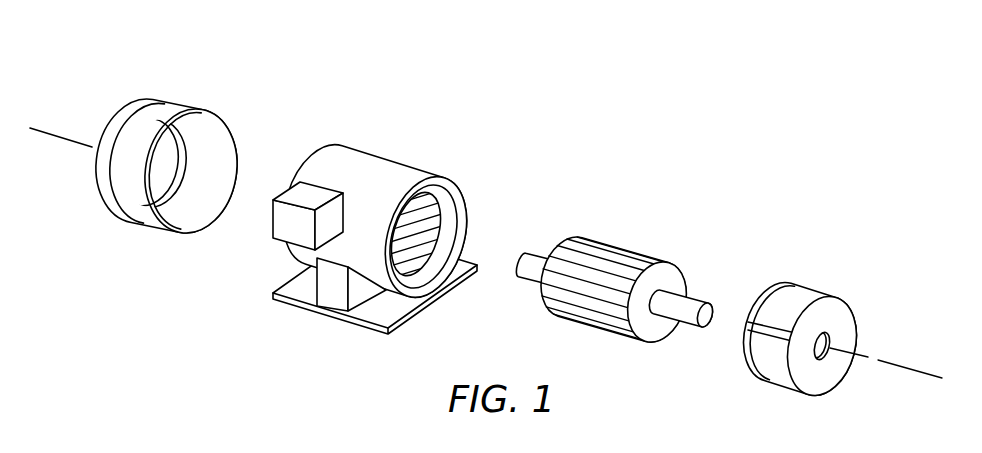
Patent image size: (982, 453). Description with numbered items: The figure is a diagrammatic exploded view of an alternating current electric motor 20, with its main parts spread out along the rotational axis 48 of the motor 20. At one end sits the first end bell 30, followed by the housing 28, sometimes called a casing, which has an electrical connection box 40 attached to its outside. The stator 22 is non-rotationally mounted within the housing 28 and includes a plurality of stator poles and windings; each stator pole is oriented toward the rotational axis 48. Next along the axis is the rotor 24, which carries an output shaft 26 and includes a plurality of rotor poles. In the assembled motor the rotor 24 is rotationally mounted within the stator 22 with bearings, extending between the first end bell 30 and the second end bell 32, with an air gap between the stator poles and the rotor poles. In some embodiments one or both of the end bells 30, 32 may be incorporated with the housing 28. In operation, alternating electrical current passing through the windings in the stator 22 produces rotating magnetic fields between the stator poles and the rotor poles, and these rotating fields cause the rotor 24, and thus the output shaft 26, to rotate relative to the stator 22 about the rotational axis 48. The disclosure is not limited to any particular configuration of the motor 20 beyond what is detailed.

The electric motor 20 is at (540, 82).
The stator 22 is at (462, 218).
The rotor 24 is at (655, 245).
The output shaft 26 is at (708, 290).
The housing 28 is at (388, 142).
The first end bell 30 is at (205, 98).
The second end bell 32 is at (837, 278).
The electrical connection box 40 is at (293, 228).
The rotational axis 48 is at (883, 362).